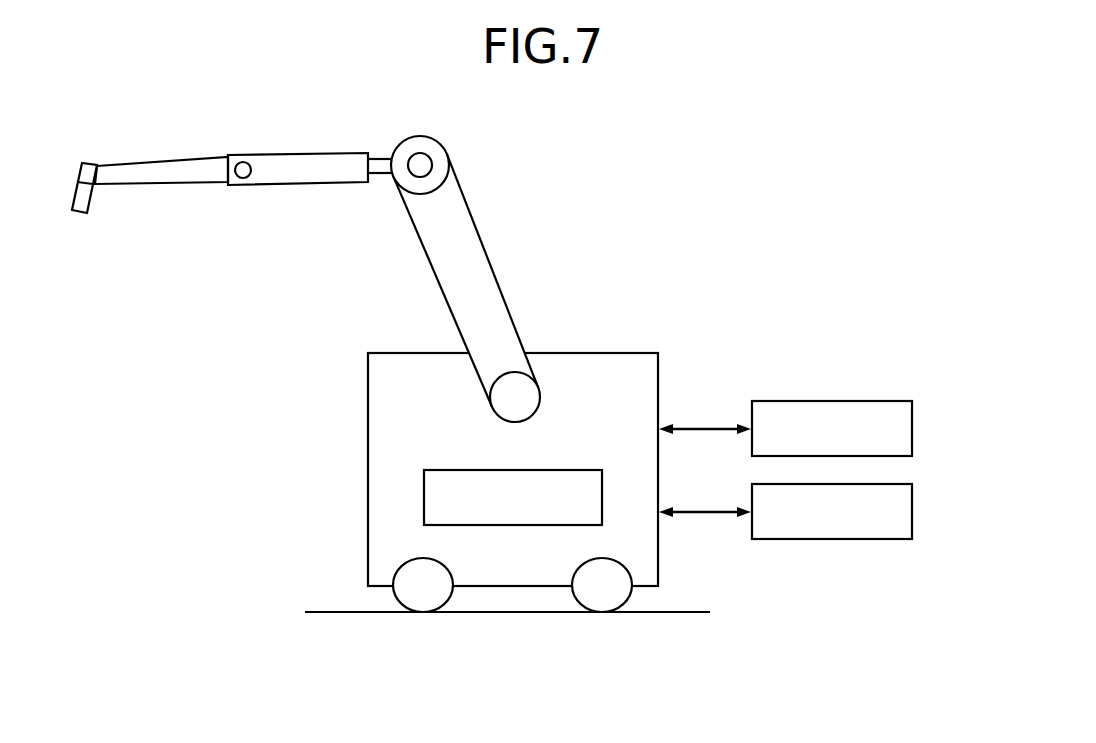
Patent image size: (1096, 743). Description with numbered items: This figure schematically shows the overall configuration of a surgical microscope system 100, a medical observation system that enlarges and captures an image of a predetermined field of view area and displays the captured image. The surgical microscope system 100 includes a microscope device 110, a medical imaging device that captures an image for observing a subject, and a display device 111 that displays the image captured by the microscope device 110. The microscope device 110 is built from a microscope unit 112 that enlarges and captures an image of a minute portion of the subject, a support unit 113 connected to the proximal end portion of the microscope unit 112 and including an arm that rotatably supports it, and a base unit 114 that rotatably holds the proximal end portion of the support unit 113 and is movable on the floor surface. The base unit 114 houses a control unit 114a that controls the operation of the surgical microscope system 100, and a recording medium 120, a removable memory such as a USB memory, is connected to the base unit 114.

The surgical microscope system 100 is at (687, 257).
The microscope device 110 is at (469, 200).
The display device 111 is at (913, 429).
The microscope unit 112 is at (86, 197).
The support unit 113 is at (283, 178).
The base unit 114 is at (367, 497).
The control unit 114a is at (551, 450).
The recording medium 120 is at (913, 512).